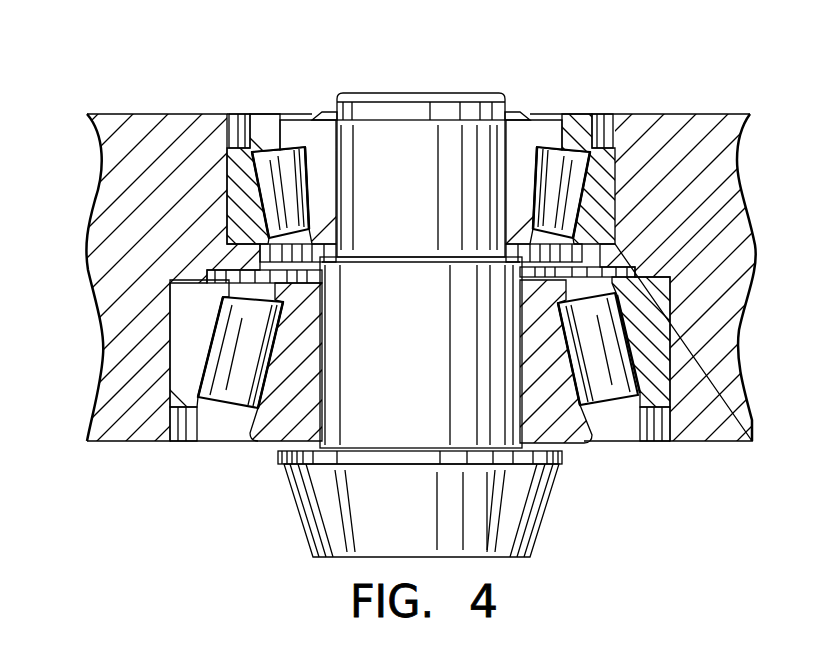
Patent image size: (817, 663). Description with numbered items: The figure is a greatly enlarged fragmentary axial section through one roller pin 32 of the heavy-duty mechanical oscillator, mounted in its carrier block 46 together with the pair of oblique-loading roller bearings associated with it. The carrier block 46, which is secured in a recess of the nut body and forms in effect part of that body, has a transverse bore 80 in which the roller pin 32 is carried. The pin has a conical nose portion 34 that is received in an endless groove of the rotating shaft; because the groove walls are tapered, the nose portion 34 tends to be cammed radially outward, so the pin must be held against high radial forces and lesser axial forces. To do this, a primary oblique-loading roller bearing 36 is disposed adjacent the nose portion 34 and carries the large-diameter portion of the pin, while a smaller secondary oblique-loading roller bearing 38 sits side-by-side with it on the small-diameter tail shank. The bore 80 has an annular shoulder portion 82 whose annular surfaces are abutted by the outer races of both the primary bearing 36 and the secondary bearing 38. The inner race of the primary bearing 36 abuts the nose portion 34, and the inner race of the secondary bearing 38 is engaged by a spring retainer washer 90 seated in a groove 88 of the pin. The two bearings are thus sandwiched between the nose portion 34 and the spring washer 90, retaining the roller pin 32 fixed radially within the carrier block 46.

The roller pin 32 is at (464, 148).
The conical nose portion 34 is at (533, 508).
The primary oblique-loading roller bearing 36 is at (237, 387).
The secondary oblique-loading roller bearing 38 is at (273, 166).
The carrier block 46 is at (720, 393).
The transverse bore 80 is at (615, 168).
The annular shoulder portion 82 is at (233, 262).
The groove 88 is at (394, 118).
The spring retainer washer 90 is at (327, 113).